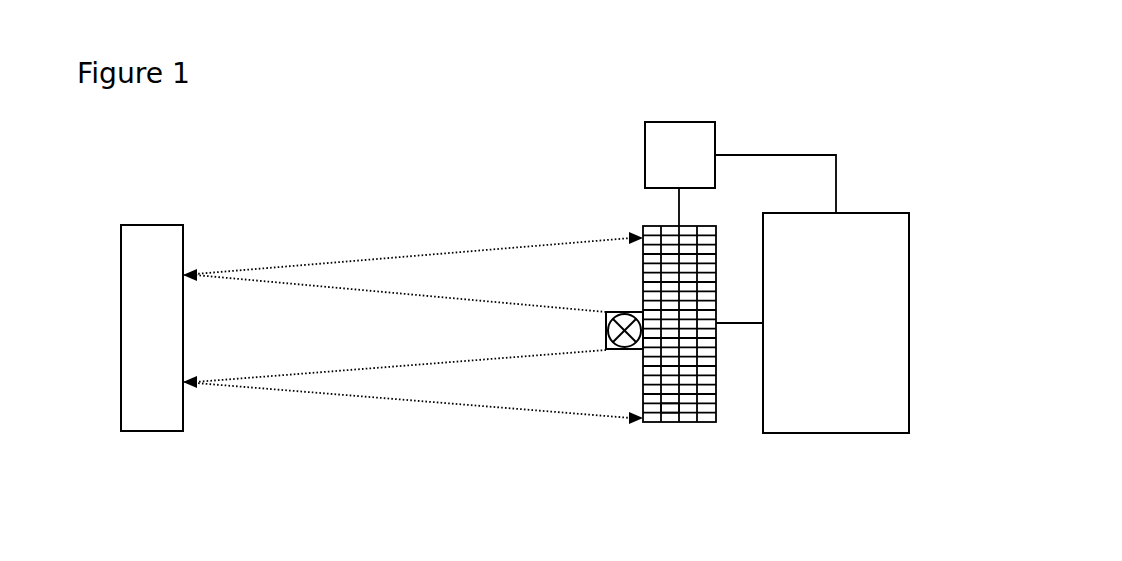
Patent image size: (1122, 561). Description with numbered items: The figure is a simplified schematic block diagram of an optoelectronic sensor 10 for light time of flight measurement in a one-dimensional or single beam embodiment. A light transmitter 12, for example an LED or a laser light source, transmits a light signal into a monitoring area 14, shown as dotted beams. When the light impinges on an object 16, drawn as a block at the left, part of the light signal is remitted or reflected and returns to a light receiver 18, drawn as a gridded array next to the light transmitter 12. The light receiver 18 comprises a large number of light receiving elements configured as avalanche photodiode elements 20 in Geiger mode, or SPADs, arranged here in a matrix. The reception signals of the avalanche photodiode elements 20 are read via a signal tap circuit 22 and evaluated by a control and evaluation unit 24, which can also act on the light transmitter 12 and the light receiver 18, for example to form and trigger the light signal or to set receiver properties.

The optoelectronic sensor 10 is at (897, 110).
The light transmitter 12 is at (608, 338).
The monitoring area 14 is at (353, 210).
The object 16 is at (157, 407).
The light receiver 18 is at (686, 361).
The avalanche photodiode elements 20 is at (665, 405).
The signal tap circuit 22 is at (677, 133).
The control and evaluation unit 24 is at (823, 418).